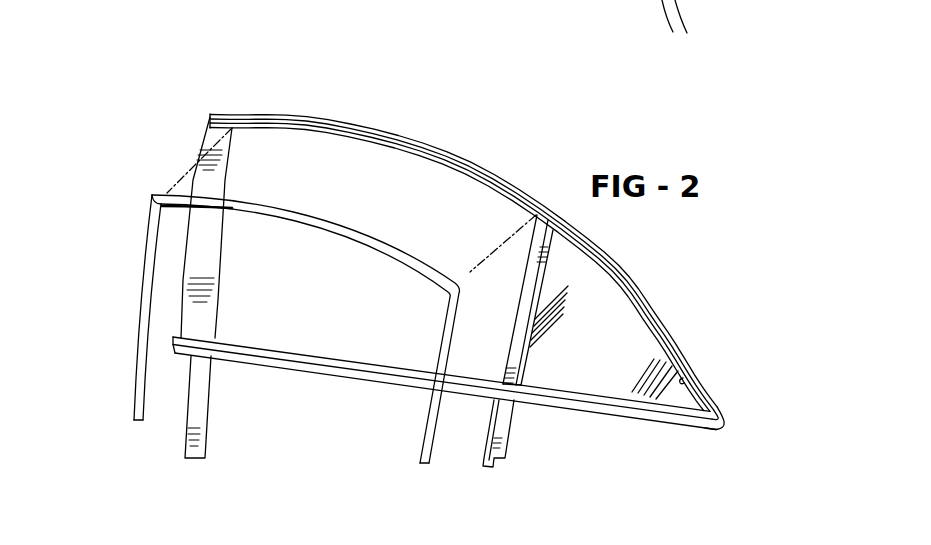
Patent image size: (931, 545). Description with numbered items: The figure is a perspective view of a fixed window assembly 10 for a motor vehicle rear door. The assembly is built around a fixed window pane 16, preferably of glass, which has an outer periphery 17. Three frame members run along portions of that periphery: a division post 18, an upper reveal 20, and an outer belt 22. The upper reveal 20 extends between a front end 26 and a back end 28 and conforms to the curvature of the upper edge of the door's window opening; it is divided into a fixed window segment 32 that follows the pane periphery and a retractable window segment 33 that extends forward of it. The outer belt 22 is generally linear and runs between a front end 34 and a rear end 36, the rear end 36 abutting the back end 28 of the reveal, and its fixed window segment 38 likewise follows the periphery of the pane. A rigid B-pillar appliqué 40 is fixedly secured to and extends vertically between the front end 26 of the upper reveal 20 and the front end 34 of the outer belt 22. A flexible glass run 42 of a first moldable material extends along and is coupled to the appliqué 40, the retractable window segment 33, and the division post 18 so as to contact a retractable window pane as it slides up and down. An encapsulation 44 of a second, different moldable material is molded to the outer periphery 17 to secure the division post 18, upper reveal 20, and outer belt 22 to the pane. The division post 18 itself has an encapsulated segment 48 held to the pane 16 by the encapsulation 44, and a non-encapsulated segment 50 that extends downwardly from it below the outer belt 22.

The fixed window assembly 10 is at (663, 315).
The fixed window pane 16 is at (612, 356).
The outer periphery 17 is at (684, 383).
The division post 18 is at (524, 302).
The upper reveal 20 is at (482, 177).
The outer belt 22 is at (350, 374).
The front end of upper reveal 26 is at (228, 113).
The back end of upper reveal 28 is at (731, 412).
The fixed window segment of upper reveal 32 is at (628, 277).
The retractable window segment of upper reveal 33 is at (392, 133).
The front end of outer belt 34 is at (176, 348).
The rear end of outer belt 36 is at (703, 437).
The fixed window segment of outer belt 38 is at (633, 411).
The B-pillar appliqué 40 is at (200, 147).
The glass run 42 is at (310, 213).
The encapsulation 44 is at (568, 260).
The encapsulated segment 48 is at (525, 367).
The non-encapsulated segment 50 is at (507, 458).